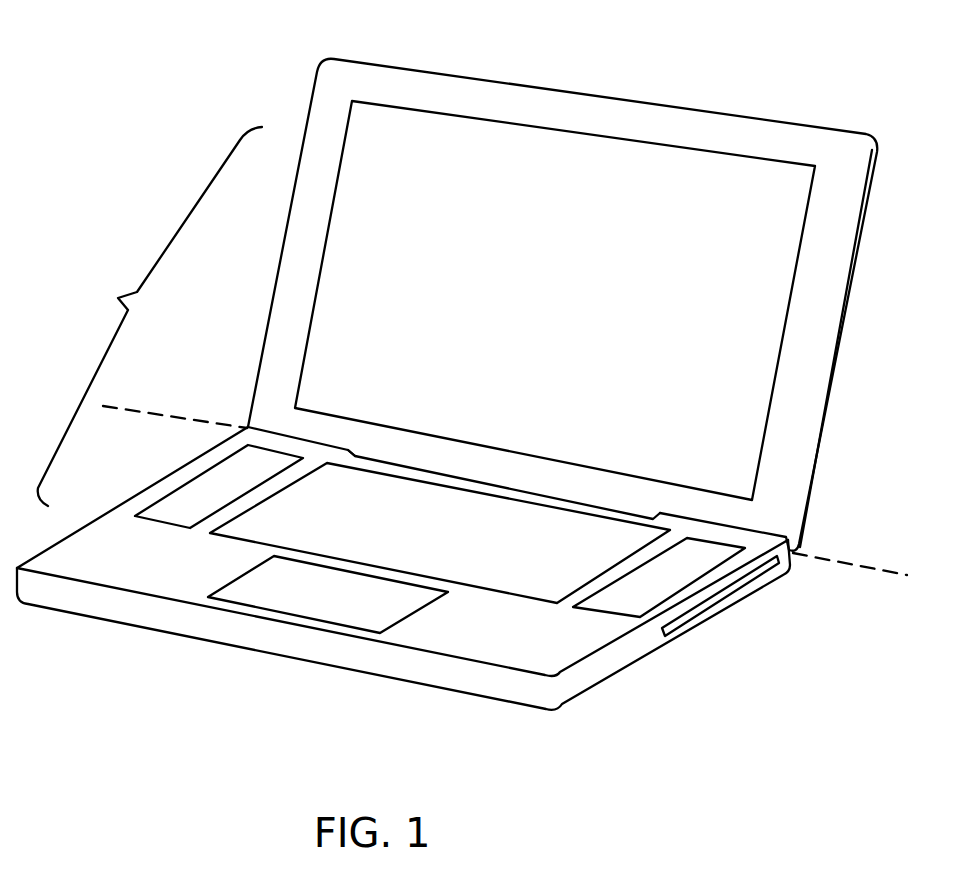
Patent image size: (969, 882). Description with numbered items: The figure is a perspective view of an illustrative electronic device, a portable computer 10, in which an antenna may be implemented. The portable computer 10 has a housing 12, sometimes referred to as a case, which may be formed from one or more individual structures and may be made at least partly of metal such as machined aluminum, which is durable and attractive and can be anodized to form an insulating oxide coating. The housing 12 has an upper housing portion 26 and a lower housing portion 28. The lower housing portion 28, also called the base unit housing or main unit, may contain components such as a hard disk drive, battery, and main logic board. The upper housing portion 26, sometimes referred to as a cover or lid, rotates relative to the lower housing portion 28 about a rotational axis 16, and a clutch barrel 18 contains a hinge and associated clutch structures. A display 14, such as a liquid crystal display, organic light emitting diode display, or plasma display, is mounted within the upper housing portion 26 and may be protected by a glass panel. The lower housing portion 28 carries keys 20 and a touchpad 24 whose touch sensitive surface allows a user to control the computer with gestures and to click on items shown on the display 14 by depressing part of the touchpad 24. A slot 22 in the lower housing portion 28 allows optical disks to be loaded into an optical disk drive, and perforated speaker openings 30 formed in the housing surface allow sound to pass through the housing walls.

The portable computer 10 is at (780, 54).
The housing 12 is at (150, 316).
The display 14 is at (570, 152).
The rotational axis 16 is at (131, 413).
The clutch barrel 18 is at (434, 461).
The keys 20 is at (518, 587).
The slot 22 is at (733, 588).
The touchpad 24 is at (240, 600).
The upper housing portion 26 is at (795, 457).
The lower housing portion 28 is at (512, 699).
The speaker openings 30 is at (162, 512).